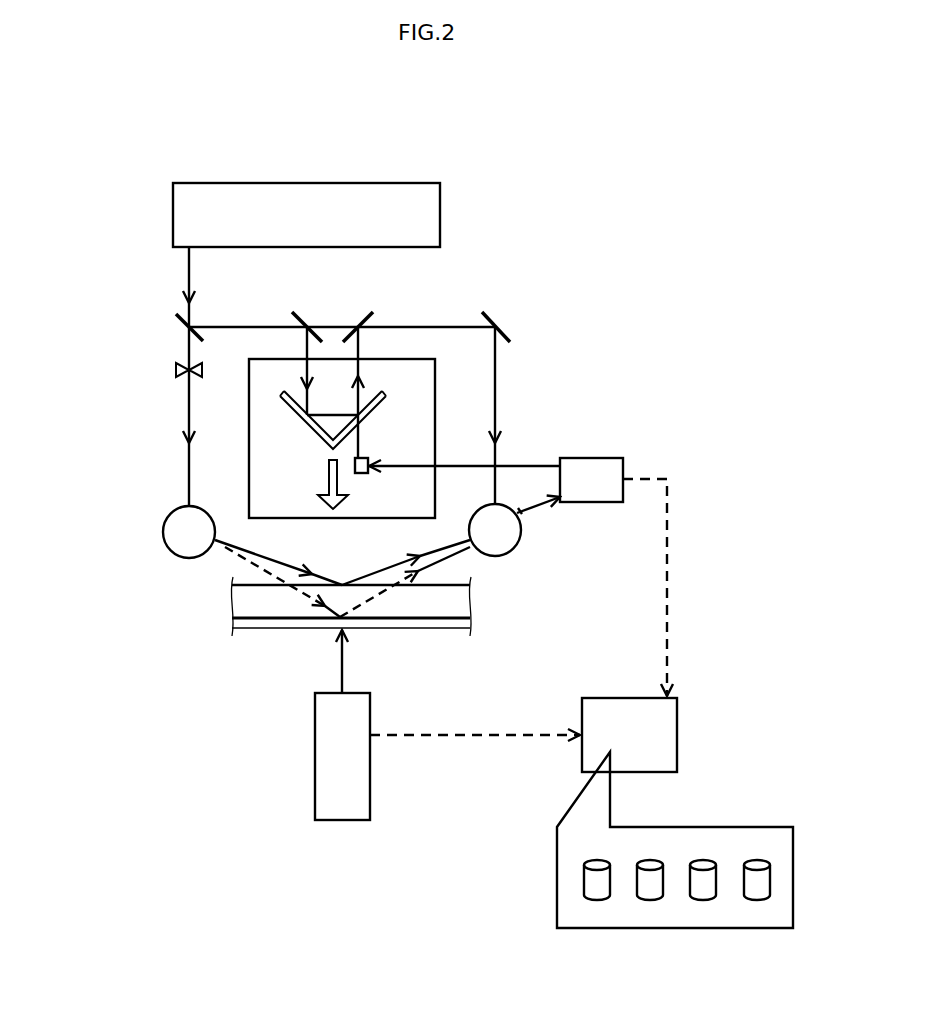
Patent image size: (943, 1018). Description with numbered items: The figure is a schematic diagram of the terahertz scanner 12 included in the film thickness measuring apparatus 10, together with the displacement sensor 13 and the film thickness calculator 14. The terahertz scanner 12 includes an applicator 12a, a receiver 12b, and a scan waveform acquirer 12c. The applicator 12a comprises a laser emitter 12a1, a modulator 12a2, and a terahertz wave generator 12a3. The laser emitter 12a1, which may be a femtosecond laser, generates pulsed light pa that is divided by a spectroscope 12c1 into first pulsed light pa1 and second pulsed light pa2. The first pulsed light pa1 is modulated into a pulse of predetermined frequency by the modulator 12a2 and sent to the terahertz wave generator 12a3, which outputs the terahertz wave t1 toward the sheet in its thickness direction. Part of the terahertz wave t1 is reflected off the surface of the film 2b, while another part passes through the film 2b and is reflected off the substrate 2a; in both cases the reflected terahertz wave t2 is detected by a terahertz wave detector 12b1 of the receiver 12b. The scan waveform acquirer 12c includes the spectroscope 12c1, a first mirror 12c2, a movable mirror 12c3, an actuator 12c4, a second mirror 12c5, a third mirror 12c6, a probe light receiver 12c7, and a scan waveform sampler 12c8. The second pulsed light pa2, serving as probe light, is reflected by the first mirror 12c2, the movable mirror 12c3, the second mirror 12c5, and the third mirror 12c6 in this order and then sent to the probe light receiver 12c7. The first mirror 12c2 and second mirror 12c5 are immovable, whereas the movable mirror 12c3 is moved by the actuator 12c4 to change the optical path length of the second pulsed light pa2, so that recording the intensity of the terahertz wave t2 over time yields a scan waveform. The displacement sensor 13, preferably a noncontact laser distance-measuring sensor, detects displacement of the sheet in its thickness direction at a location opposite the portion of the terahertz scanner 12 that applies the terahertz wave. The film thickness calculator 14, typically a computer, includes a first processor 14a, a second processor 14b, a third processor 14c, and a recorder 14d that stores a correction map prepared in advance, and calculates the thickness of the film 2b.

The film thickness measuring apparatus 10 is at (92, 183).
The terahertz scanner 12 is at (555, 238).
The applicator 12a is at (155, 562).
The laser emitter 12a1 is at (394, 183).
The modulator 12a2 is at (176, 370).
The terahertz wave generator 12a3 is at (163, 528).
The receiver 12b is at (548, 543).
The terahertz wave detector 12b1 is at (470, 552).
The scan waveform acquirer 12c is at (640, 355).
The spectroscope 12c1 is at (176, 320).
The first mirror 12c2 is at (296, 313).
The movable mirror 12c3 is at (300, 418).
The actuator 12c4 is at (364, 458).
The second mirror 12c5 is at (375, 315).
The third mirror 12c6 is at (510, 330).
The probe light receiver 12c7 is at (522, 505).
The scan waveform sampler 12c8 is at (610, 458).
The pulsed light pa is at (189, 275).
The first pulsed light pa1 is at (180, 412).
The second pulsed light pa2 is at (231, 327).
The terahertz wave t1 is at (232, 556).
The reflected terahertz wave t2 is at (390, 565).
The substrate 2a is at (457, 630).
The film 2b is at (441, 590).
The displacement sensor 13 is at (370, 783).
The film thickness calculator 14 is at (683, 712).
The first processor 14a is at (597, 896).
The second processor 14b is at (650, 896).
The third processor 14c is at (703, 896).
The recorder 14d is at (757, 896).